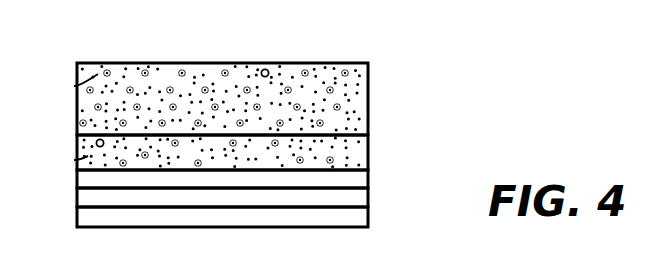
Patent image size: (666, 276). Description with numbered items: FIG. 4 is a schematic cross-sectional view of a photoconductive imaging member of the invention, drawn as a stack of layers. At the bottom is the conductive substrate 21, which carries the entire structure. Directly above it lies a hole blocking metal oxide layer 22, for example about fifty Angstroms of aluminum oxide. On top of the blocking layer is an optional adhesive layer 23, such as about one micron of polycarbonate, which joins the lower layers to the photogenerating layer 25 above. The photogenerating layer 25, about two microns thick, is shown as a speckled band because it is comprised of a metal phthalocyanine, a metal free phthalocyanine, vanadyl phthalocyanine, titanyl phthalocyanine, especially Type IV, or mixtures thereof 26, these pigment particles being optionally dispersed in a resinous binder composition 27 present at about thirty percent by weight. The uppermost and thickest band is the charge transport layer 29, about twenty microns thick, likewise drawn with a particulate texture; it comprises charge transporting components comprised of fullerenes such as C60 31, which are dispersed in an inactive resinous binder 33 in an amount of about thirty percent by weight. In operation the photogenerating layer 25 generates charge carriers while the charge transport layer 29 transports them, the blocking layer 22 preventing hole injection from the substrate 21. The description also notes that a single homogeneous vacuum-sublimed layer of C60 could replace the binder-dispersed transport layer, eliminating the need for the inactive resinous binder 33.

The conductive substrate 21 is at (368, 218).
The hole blocking metal oxide layer 22 is at (368, 201).
The adhesive layer 23 is at (368, 178).
The photogenerating layer 25 is at (368, 158).
The phthalocyanine photogenerating material 26 is at (97, 146).
The resinous binder composition 27 is at (74, 160).
The charge transport layer 29 is at (368, 90).
The fullerene charge transporting component 31 is at (74, 86).
The inactive resinous binder 33 is at (265, 69).